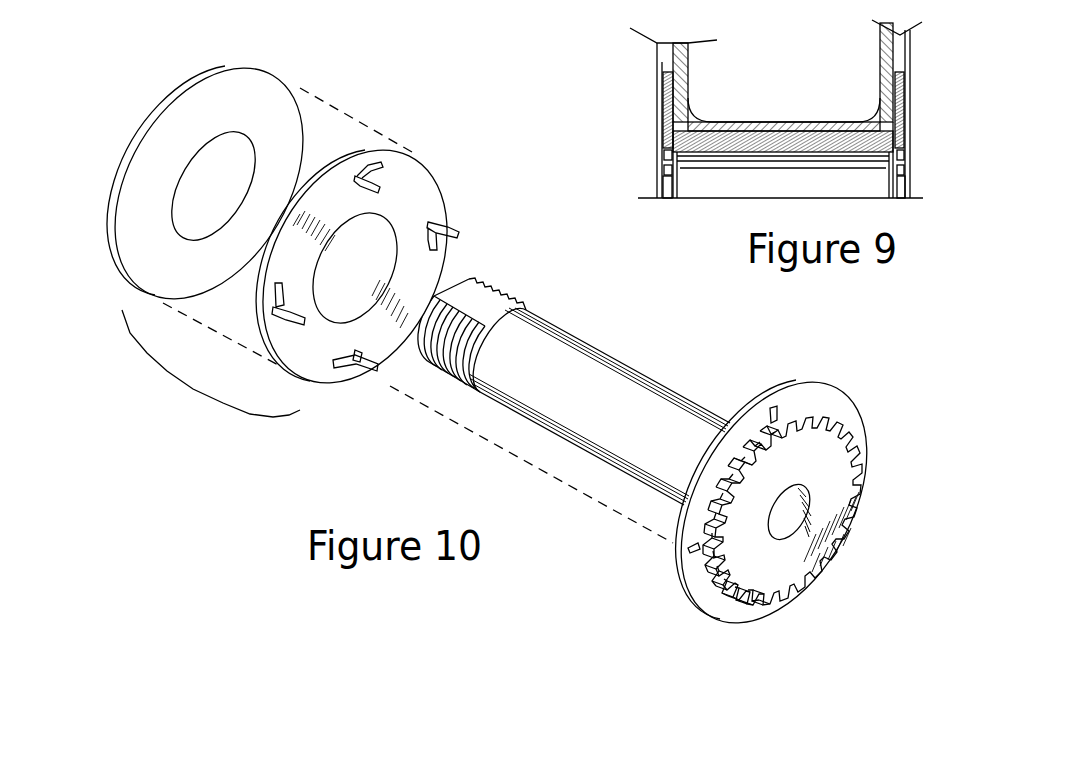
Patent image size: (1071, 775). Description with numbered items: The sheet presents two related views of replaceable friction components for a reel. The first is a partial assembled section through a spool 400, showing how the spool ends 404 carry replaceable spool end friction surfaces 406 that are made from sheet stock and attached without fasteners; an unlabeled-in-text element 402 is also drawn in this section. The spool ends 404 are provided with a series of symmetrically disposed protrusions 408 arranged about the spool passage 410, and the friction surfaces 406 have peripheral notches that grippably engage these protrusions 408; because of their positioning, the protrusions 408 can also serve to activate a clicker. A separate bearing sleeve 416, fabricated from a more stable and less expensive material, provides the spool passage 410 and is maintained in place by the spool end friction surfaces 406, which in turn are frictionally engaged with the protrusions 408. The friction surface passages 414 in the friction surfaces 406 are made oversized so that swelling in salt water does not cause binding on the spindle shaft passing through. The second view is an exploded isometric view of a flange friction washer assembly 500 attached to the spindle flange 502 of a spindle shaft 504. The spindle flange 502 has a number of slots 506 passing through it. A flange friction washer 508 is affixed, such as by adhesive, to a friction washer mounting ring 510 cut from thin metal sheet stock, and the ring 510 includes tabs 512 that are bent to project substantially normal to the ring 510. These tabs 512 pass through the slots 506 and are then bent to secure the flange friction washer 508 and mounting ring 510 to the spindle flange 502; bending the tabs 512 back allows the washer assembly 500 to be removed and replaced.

In FIG. 9, the spool 400 is at (593, 83).
In FIG. 9, the cap plate 402 is at (823, 122).
In FIG. 9, the spool ends 404 is at (655, 47).
In FIG. 9, the spool end friction surfaces 406 is at (662, 122).
In FIG. 9, the protrusions 408 is at (660, 140).
In FIG. 9, the spool passage 410 is at (752, 177).
In FIG. 9, the friction surface passages 414 is at (663, 178).
In FIG. 9, the bearing sleeve 416 is at (748, 128).
In FIG. 10, the flange friction washer assembly 500 is at (188, 375).
In FIG. 10, the spindle flange 502 is at (670, 573).
In FIG. 10, the spindle shaft 504 is at (593, 495).
In FIG. 10, the slots 506 is at (697, 545).
In FIG. 10, the flange friction washer 508 is at (206, 80).
In FIG. 10, the friction washer mounting ring 510 is at (347, 392).
In FIG. 10, the tabs 512 is at (281, 297).